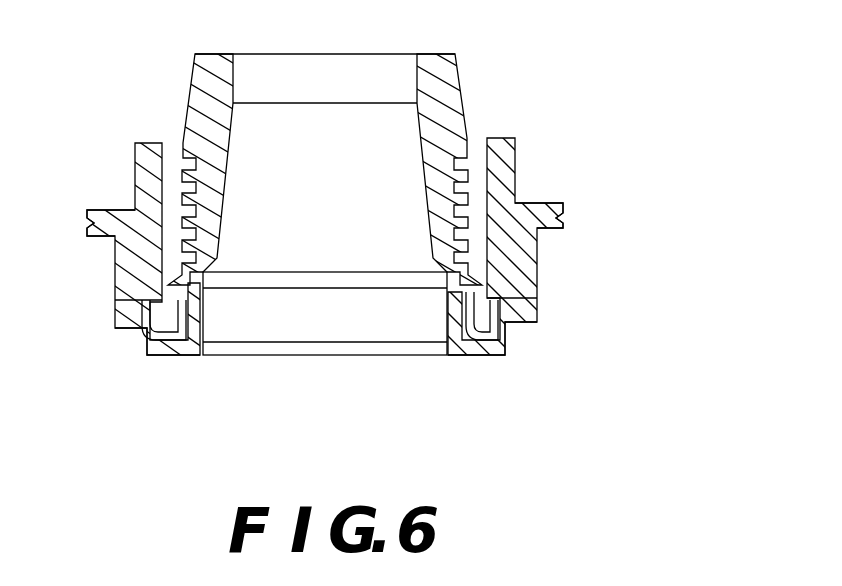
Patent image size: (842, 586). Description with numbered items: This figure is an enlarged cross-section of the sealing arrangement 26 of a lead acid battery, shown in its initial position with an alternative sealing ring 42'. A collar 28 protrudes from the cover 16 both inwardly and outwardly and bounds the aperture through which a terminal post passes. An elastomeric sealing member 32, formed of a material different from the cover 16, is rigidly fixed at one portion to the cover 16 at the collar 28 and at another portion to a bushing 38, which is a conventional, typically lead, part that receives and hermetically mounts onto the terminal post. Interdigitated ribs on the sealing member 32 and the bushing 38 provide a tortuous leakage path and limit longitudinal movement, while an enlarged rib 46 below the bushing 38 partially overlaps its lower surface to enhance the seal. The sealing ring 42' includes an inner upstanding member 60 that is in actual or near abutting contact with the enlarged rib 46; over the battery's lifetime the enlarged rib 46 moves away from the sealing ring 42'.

The cover 16 is at (563, 230).
The sealing arrangement 26 is at (175, 368).
The collar 28 is at (136, 146).
The sealing member 32 is at (518, 178).
The bushing 38 is at (187, 117).
The sealing ring 42' is at (349, 370).
The enlarged rib 46 is at (203, 287).
The inner upstanding member 60 is at (446, 322).